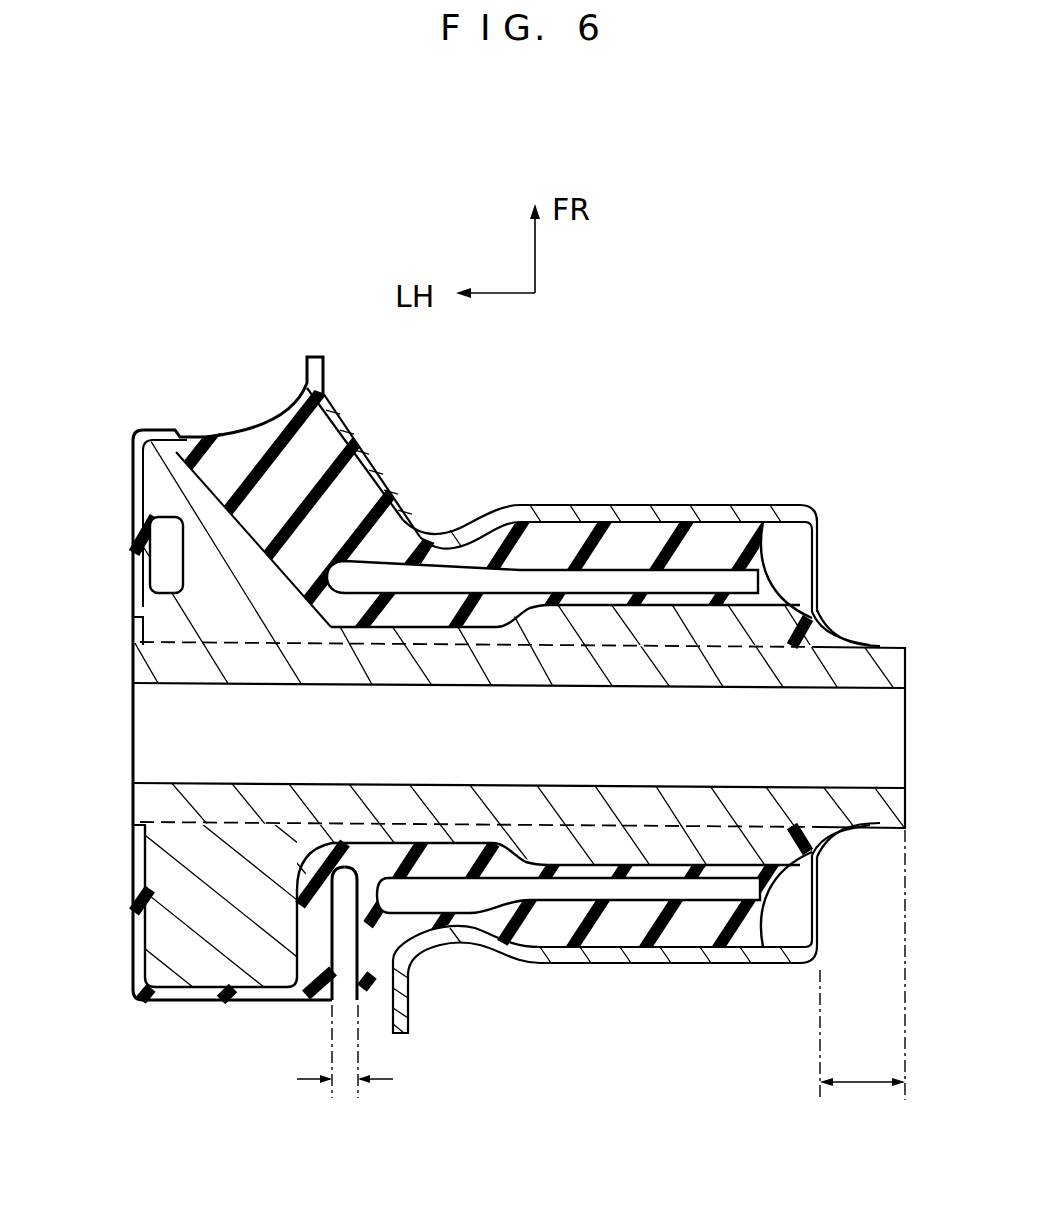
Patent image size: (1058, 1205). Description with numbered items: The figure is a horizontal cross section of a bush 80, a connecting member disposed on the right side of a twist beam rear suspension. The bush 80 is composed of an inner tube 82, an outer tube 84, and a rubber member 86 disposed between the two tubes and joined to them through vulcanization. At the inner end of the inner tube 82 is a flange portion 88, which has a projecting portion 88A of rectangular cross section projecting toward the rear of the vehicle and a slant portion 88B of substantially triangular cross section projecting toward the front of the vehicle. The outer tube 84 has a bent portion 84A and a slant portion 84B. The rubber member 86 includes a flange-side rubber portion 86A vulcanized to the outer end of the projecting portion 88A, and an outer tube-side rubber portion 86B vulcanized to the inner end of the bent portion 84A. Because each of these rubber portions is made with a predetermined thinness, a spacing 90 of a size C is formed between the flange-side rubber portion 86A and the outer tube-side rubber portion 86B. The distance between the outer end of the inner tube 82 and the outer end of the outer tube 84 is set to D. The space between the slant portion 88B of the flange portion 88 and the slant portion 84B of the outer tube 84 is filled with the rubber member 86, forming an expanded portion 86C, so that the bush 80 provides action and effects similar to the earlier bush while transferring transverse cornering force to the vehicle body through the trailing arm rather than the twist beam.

The bush 80 is at (826, 420).
The inner tube 82 is at (883, 677).
The outer tube 84 is at (674, 498).
The bent portion 84A is at (404, 992).
The slant portion 84B is at (373, 474).
The rubber member 86 is at (124, 524).
The flange-side rubber portion 86A is at (313, 950).
The outer tube-side rubber portion 86B is at (367, 980).
The expanded portion 86C is at (260, 427).
The flange portion 88 is at (503, 607).
The projecting portion 88A is at (273, 960).
The slant portion 88B is at (233, 537).
The spacing 90 is at (347, 970).
The size of spacing C is at (348, 1080).
The distance between outer ends of inner and outer tubes D is at (862, 1082).